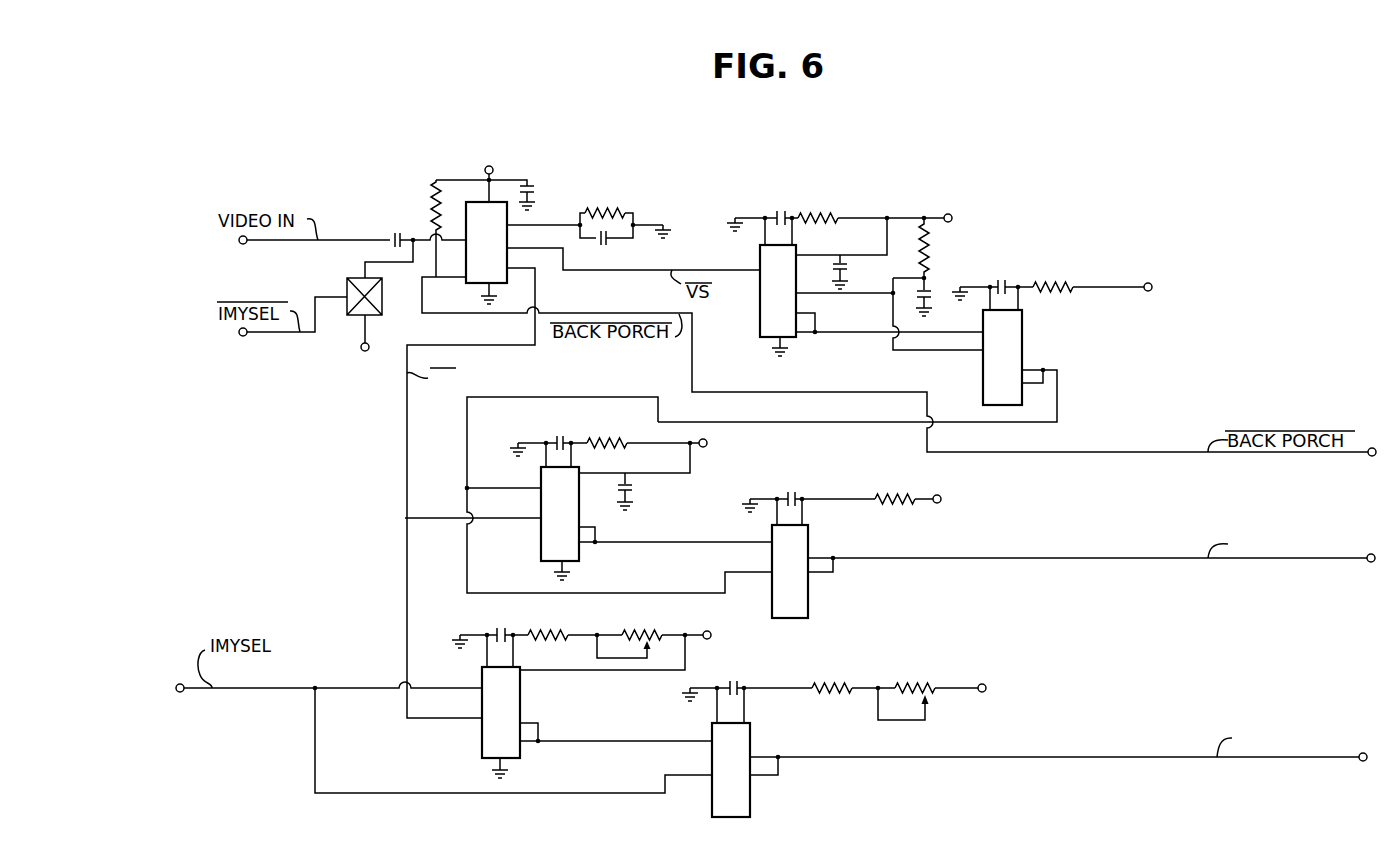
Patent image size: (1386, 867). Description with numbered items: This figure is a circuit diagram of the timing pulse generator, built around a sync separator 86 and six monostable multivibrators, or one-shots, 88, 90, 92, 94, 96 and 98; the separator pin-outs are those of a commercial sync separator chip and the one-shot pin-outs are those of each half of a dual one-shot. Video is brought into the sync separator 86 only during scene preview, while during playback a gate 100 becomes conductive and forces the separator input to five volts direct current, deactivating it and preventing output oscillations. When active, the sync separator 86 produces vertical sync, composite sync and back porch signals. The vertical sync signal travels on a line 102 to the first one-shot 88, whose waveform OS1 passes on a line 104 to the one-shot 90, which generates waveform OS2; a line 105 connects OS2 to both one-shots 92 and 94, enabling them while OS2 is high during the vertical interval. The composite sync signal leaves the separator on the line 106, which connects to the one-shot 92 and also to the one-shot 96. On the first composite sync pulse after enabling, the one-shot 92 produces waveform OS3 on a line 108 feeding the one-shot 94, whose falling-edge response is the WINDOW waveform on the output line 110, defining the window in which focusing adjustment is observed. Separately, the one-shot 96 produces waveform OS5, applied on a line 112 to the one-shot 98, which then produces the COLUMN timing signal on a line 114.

The sync separator 86 is at (477, 278).
The first one-shot 88 is at (768, 312).
The one-shot 90 is at (988, 378).
The one-shot 92 is at (550, 527).
The one-shot 94 is at (780, 602).
The one-shot 96 is at (482, 737).
The one-shot 98 is at (742, 803).
The gate 100 is at (347, 282).
The line 102 is at (566, 257).
The line 104 is at (826, 332).
The line 105 is at (857, 424).
The line 106 is at (408, 443).
The line 108 is at (667, 541).
The output line 110 is at (940, 559).
The line 112 is at (563, 742).
The line 114 is at (868, 758).